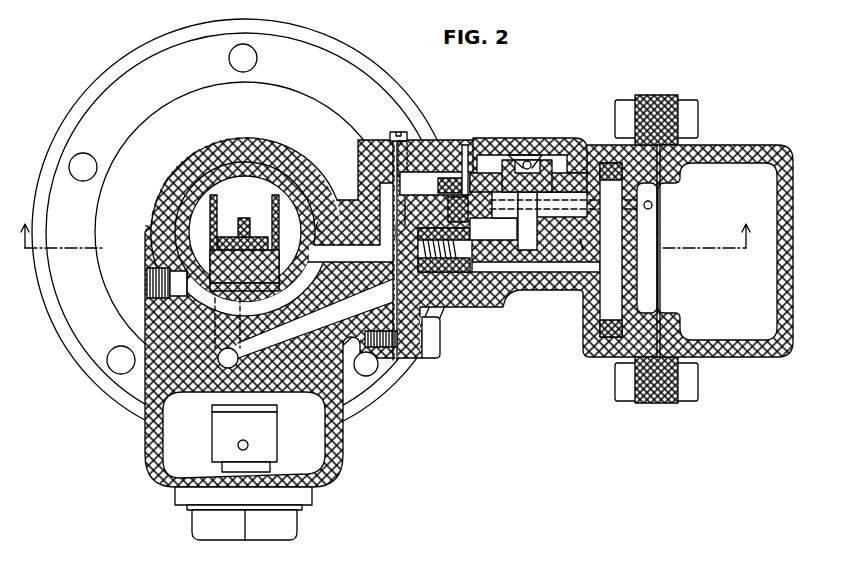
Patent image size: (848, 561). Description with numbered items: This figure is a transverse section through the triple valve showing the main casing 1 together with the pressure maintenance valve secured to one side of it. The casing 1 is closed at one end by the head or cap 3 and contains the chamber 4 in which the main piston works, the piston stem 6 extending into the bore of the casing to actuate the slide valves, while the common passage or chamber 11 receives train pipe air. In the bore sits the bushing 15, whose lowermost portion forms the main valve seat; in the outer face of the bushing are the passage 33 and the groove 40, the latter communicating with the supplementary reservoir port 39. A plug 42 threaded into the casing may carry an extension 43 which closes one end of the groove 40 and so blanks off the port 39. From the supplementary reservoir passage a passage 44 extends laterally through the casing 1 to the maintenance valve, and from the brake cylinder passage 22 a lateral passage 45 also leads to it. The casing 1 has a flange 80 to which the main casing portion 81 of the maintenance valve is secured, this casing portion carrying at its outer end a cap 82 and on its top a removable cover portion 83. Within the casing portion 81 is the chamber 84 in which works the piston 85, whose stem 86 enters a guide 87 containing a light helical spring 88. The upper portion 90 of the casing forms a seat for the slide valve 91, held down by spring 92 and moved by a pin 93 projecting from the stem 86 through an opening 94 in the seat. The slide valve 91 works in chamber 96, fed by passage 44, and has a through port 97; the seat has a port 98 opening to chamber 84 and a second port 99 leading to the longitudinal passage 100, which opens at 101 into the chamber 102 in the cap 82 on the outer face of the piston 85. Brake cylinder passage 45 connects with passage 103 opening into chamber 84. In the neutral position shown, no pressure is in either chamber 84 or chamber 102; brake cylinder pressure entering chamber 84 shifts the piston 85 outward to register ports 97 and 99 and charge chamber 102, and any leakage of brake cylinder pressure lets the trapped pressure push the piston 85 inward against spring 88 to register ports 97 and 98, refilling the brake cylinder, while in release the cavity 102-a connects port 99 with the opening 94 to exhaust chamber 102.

The casing 1 is at (237, 121).
The head or cap 3 is at (108, 69).
The chamber 4 is at (386, 222).
The stem 6 is at (238, 240).
The common passage or chamber 11 is at (244, 435).
The bushing 15 is at (185, 217).
The passage 22 is at (228, 358).
The passage 33 is at (320, 224).
The port 39 is at (255, 281).
The groove 40 is at (225, 320).
The plug 42 is at (150, 272).
The extension 43 is at (168, 292).
The passage 44 is at (350, 224).
The lateral passage 45 is at (307, 321).
The flange 80 is at (389, 237).
The main casing portion 81 is at (577, 285).
The cap 82 is at (738, 147).
The removable cover portion 83 is at (552, 147).
The chamber 84 is at (612, 250).
The piston 85 is at (640, 243).
The stem 86 is at (581, 236).
The guide 87 is at (466, 238).
The light helical spring 88 is at (415, 213).
The upper portion of casing (valve seat) 90 is at (562, 207).
The slide valve 91 is at (590, 152).
The spring 92 is at (510, 168).
The pin 93 is at (528, 211).
The opening 94 is at (505, 205).
The chamber 96 is at (435, 184).
The through port 97 is at (465, 175).
The port 98 is at (453, 212).
The second port 99 is at (468, 145).
The longitudinal passage 100 is at (617, 205).
The opening 101 is at (652, 205).
The chamber 102 is at (705, 263).
The cavity 102-a is at (503, 172).
The passage 103 is at (453, 287).